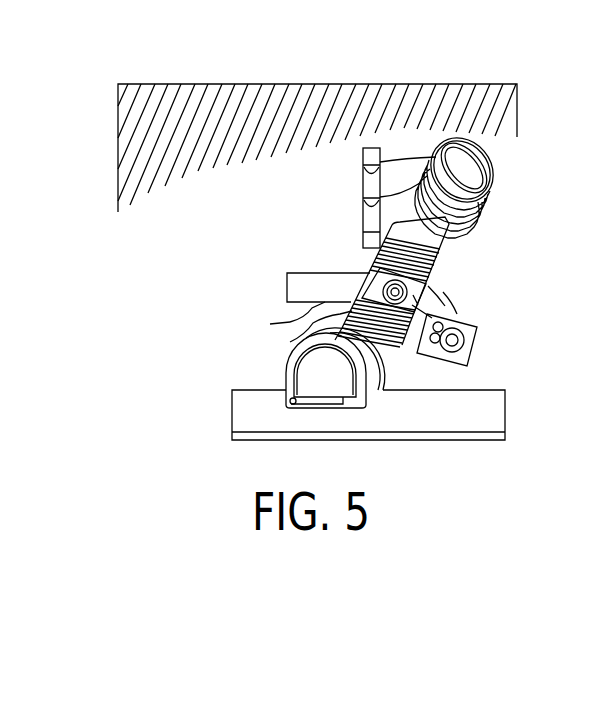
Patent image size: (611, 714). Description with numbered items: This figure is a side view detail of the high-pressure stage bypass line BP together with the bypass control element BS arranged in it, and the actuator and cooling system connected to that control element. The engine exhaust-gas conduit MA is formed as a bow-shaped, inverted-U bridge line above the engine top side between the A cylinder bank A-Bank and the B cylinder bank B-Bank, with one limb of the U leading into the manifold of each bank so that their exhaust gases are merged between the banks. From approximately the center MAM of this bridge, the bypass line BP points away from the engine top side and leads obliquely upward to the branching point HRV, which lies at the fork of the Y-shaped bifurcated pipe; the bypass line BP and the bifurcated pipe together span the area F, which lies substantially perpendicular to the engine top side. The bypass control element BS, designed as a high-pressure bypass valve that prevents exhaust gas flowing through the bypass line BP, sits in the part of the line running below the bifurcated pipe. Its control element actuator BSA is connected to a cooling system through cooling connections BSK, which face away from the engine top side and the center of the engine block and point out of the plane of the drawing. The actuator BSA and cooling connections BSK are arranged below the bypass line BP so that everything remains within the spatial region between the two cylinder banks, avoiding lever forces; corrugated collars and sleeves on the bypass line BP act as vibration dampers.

The area F is at (280, 131).
The bypass control element BS is at (374, 268).
The branching point HRV is at (473, 226).
The B cylinder bank B-Bank is at (293, 288).
The A cylinder bank A-Bank is at (468, 412).
The center of the bridge of the exhaust-gas conduit MAM is at (290, 342).
The engine exhaust-gas conduit MA is at (302, 377).
The high-pressure stage bypass line BP is at (290, 322).
The control element actuator BSA is at (468, 322).
The cooling connections BSK is at (471, 330).